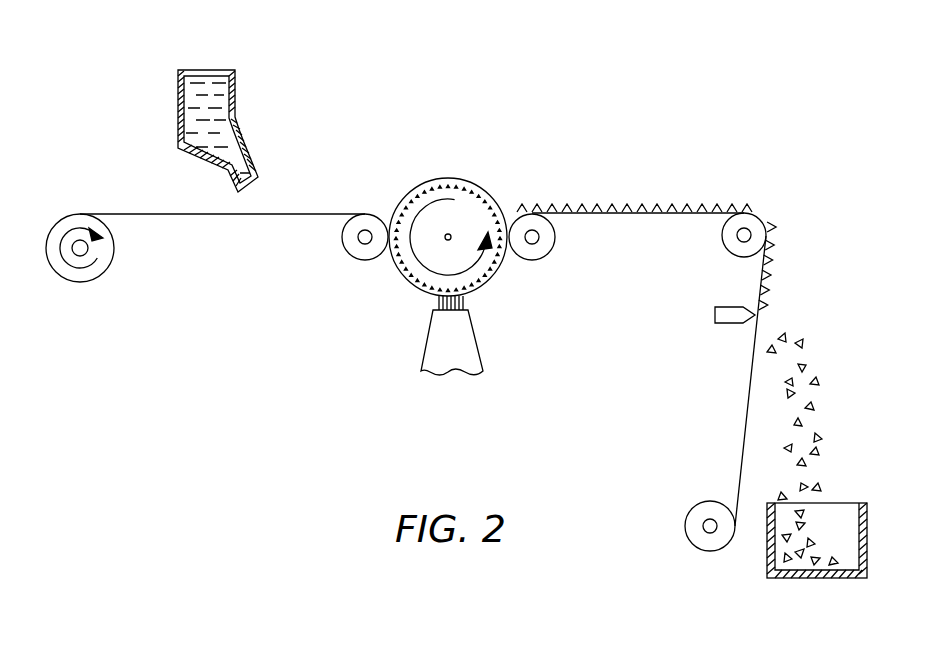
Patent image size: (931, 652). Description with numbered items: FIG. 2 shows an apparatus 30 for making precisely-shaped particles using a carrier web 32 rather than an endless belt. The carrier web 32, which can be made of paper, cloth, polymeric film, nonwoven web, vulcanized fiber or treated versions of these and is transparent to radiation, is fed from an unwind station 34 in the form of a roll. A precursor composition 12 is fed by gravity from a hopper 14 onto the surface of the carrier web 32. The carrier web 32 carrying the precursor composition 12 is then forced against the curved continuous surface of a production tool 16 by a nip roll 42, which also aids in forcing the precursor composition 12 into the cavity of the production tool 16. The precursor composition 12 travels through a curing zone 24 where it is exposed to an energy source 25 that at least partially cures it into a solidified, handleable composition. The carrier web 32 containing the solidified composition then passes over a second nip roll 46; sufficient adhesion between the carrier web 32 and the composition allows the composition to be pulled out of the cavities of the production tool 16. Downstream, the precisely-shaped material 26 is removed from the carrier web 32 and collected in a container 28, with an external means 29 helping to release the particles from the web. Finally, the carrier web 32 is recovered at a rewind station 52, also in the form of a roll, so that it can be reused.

The precursor composition 12 is at (202, 78).
The hopper 14 is at (236, 72).
The production tool 16 is at (437, 178).
The curing zone 24 is at (445, 373).
The energy source 25 is at (452, 358).
The precisely-shaped material 26 is at (820, 440).
The container 28 is at (826, 578).
The external means 29 is at (723, 316).
The apparatus 30 is at (492, 152).
The carrier web 32 is at (133, 213).
The unwind station 34 is at (100, 270).
The nip roll 42 is at (363, 252).
The nip roll 46 is at (540, 249).
The rewind station 52 is at (685, 526).